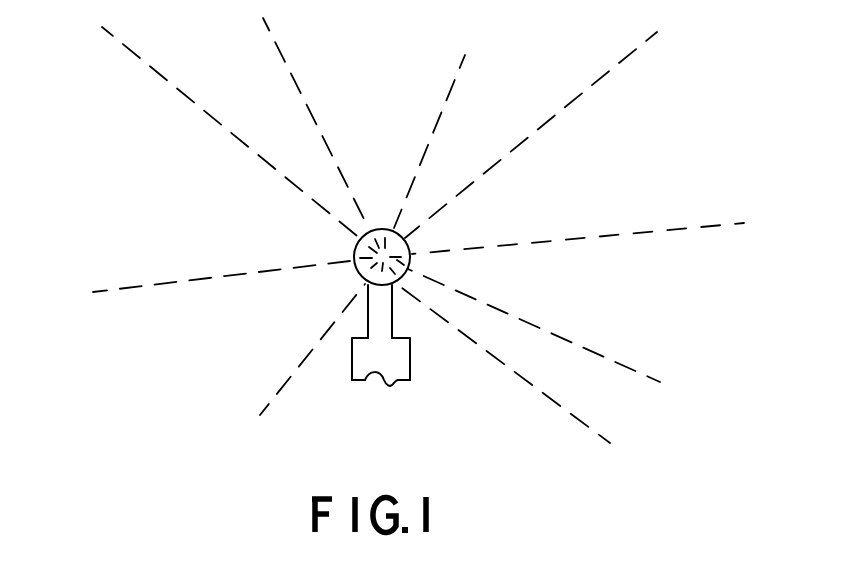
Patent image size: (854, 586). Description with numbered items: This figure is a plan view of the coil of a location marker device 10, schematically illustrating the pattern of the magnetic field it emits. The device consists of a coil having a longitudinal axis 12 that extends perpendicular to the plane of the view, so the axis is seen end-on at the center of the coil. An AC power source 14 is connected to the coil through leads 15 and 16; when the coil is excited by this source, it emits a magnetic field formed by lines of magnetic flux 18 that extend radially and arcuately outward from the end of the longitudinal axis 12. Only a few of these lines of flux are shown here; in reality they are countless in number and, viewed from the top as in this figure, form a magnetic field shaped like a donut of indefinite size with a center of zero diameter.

The location marker device 10 is at (407, 249).
The longitudinal axis 12 is at (388, 250).
The AC power source 14 is at (388, 386).
The lead 15 is at (352, 379).
The lead 16 is at (409, 358).
The lines of magnetic flux 18 is at (675, 228).